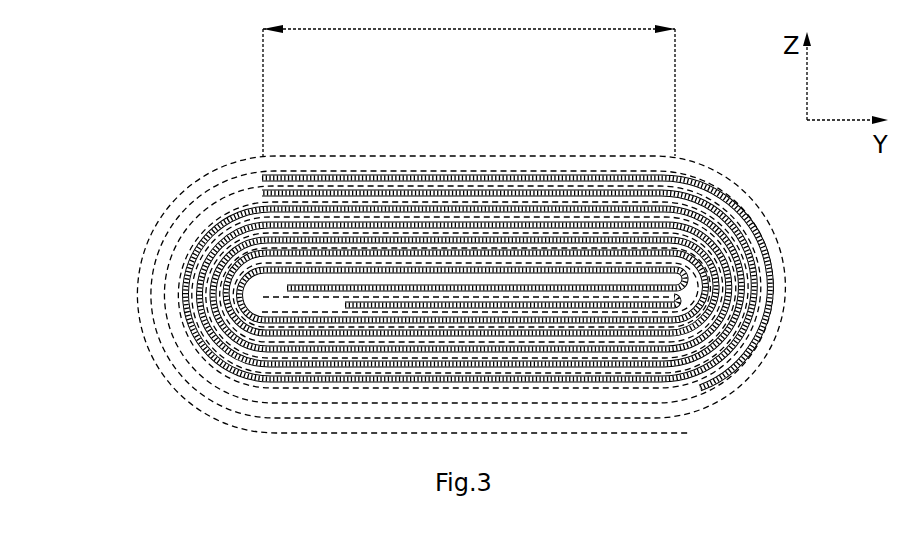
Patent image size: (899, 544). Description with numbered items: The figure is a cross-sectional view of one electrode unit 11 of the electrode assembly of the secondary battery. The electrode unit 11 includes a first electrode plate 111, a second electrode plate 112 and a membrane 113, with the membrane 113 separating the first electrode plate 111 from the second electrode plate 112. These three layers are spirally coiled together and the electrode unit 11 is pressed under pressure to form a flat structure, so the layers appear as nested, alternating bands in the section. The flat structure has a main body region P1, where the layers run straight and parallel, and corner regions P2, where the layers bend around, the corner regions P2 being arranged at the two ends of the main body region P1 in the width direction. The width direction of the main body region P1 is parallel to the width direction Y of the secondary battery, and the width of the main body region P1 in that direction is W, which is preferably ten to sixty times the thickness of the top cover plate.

The electrode unit 11 is at (408, 232).
The first electrode plate 111 is at (394, 178).
The second electrode plate 112 is at (458, 192).
The membrane 113 is at (510, 157).
The main body region P1 is at (605, 135).
The corner regions P2 is at (122, 300).
The width of the main body region W is at (469, 80).